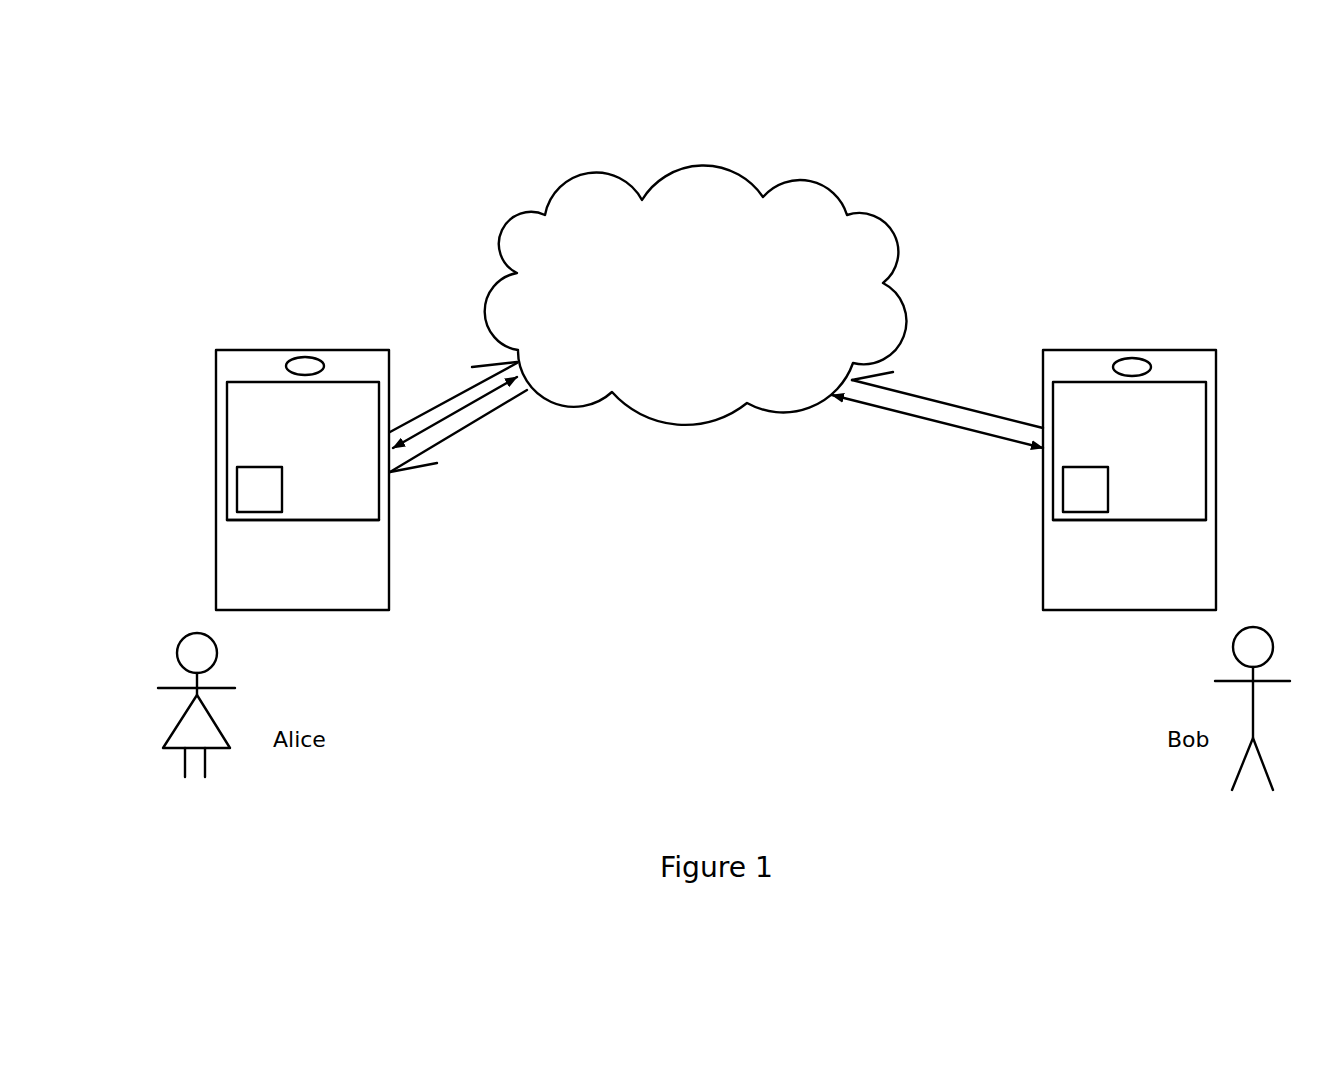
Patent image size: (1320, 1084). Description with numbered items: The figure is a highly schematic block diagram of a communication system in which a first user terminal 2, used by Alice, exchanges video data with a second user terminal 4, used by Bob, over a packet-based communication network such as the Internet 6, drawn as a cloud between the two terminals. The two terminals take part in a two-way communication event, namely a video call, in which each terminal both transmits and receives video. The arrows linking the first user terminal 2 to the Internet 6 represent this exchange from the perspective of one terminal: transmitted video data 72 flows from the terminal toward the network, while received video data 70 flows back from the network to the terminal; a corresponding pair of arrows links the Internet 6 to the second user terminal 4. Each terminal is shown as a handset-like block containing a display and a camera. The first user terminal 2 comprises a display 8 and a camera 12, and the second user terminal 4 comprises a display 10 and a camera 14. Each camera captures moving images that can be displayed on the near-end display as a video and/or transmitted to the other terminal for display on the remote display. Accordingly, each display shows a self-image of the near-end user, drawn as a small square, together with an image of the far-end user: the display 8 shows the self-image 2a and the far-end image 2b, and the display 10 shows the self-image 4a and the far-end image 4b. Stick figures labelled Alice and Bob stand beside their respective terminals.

The first user terminal 2 is at (219, 368).
The display 8 is at (276, 391).
The camera 12 is at (312, 361).
The self-image 2a is at (244, 500).
The image of the far-end user 2b is at (364, 510).
The transmitted video data 72 is at (459, 394).
The received video data 70 is at (467, 424).
The Internet 6 is at (817, 207).
The second user terminal 4 is at (1050, 366).
The display 10 is at (1103, 392).
The camera 14 is at (1140, 360).
The self-image 4a is at (1073, 500).
The image of the far-end user 4b is at (1192, 510).